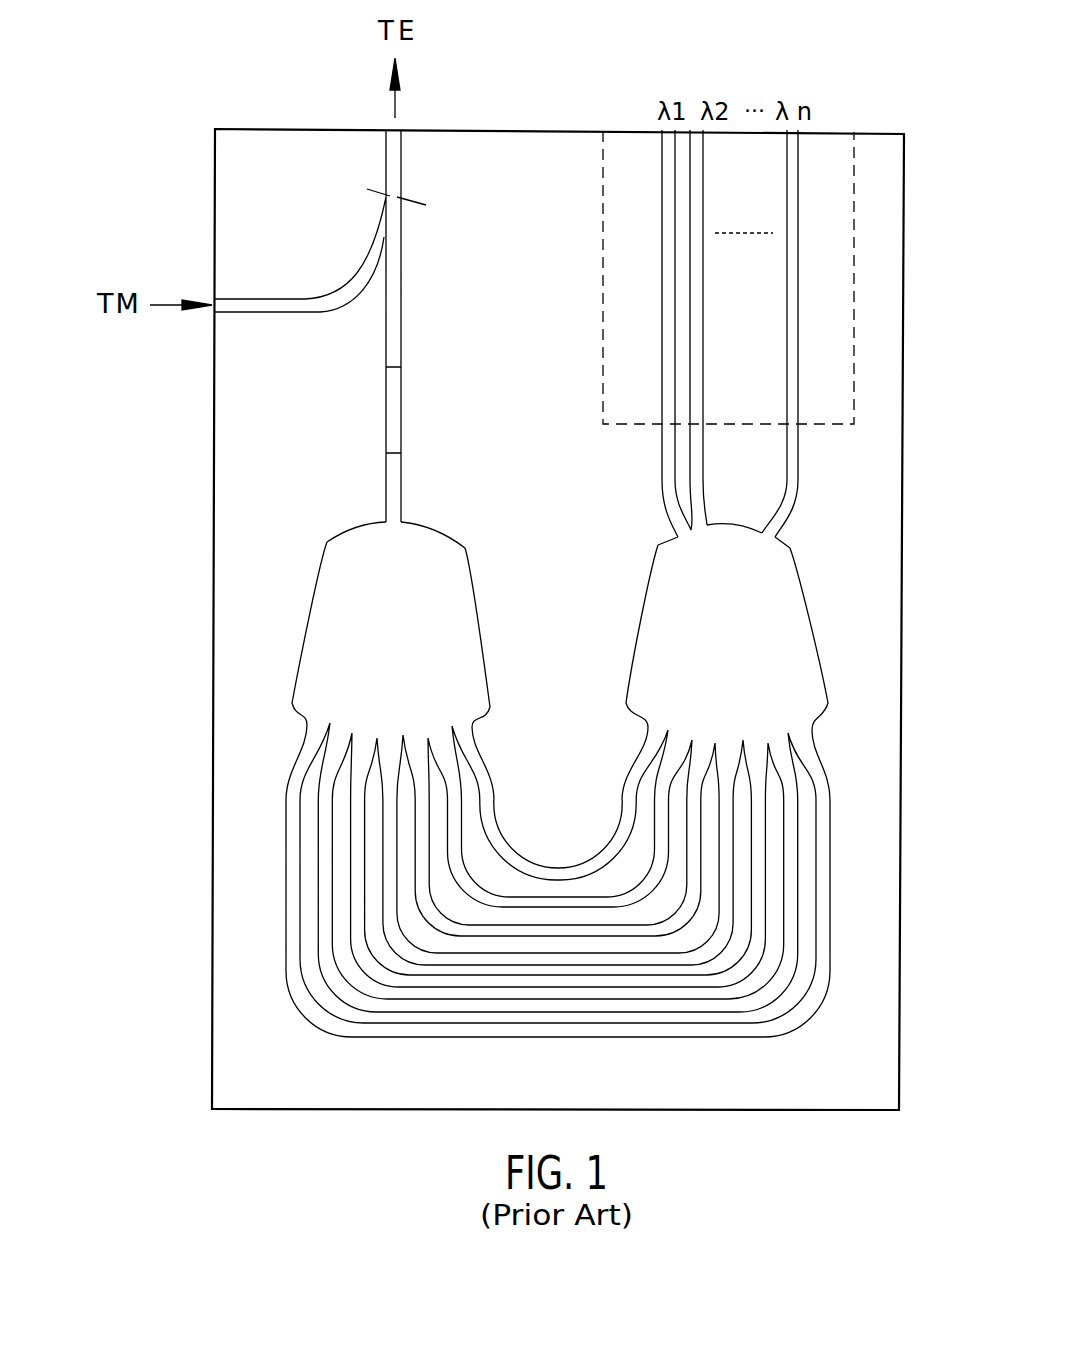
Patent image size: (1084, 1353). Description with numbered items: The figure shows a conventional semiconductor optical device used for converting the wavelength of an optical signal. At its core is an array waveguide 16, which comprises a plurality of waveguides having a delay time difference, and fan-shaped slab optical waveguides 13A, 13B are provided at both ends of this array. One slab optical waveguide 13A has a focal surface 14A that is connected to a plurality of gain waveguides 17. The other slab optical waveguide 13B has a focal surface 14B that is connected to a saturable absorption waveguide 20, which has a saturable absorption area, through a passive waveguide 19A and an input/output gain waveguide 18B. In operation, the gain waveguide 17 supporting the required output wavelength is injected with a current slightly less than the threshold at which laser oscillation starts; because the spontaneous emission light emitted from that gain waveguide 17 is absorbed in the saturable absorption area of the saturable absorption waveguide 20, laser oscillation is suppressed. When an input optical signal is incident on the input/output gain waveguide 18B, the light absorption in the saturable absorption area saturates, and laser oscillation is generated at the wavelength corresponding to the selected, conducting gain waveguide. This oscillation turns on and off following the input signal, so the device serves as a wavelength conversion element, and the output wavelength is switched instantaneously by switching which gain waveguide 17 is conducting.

The slab optical waveguide 13A is at (787, 593).
The slab optical waveguide 13B is at (456, 623).
The focal surface 14A is at (790, 550).
The focal surface 14B is at (445, 538).
The array waveguide 16 is at (398, 1040).
The gain waveguides 17 is at (660, 488).
The input/output gain waveguide 18B is at (401, 481).
The passive waveguide 19A is at (401, 447).
The saturable absorption waveguide 20 is at (395, 402).